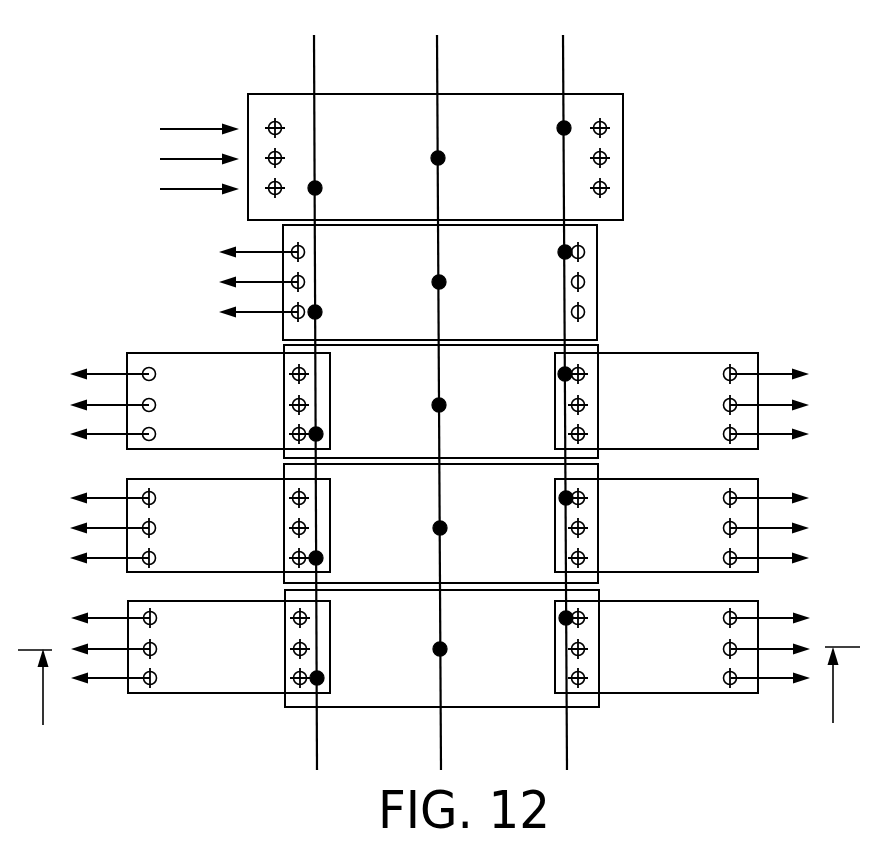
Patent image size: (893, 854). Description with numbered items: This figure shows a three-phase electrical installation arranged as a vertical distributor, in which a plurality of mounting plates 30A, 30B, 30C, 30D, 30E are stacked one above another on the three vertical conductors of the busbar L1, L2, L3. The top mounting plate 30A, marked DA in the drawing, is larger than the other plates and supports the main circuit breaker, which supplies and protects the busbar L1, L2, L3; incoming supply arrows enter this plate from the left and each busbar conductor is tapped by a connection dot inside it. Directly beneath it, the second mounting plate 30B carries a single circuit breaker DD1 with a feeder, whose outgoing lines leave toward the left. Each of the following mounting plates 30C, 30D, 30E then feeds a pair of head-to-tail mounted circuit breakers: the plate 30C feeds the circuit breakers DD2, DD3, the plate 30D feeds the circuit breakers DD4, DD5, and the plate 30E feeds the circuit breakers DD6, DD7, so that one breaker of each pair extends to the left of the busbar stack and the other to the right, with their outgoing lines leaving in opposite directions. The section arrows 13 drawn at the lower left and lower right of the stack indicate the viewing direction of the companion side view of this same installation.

The top mounting plate 30A is at (612, 167).
The second mounting plate 30B is at (592, 292).
The mounting plate 30C is at (441, 401).
The mounting plate 30D is at (441, 523).
The mounting plate 30E is at (442, 648).
The section line for FIG. 13 is at (439, 686).
The distribution assembly DA is at (436, 132).
The circuit breaker DD1 is at (453, 282).
The circuit breaker DD2 is at (200, 401).
The circuit breaker DD3 is at (682, 401).
The circuit breaker DD4 is at (200, 525).
The circuit breaker DD5 is at (682, 525).
The circuit breaker DD6 is at (200, 647).
The circuit breaker DD7 is at (682, 647).
The busbar L1 is at (313, 387).
The busbar L2 is at (438, 387).
The busbar L3 is at (565, 387).